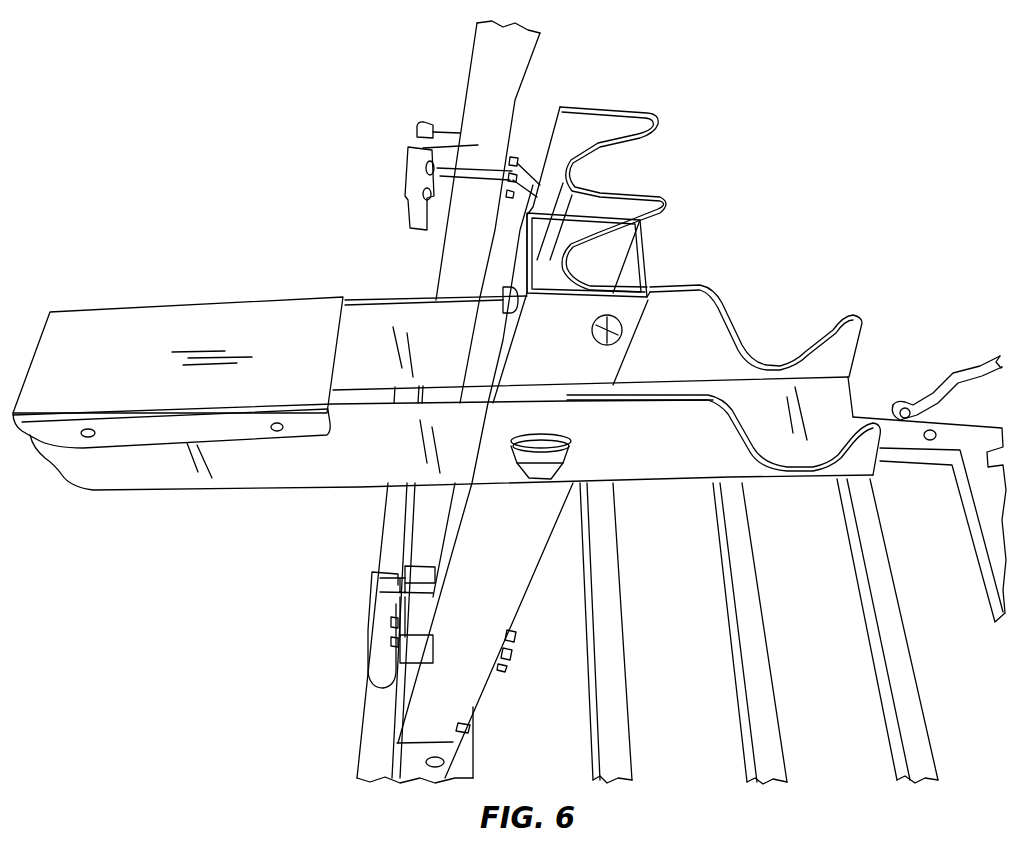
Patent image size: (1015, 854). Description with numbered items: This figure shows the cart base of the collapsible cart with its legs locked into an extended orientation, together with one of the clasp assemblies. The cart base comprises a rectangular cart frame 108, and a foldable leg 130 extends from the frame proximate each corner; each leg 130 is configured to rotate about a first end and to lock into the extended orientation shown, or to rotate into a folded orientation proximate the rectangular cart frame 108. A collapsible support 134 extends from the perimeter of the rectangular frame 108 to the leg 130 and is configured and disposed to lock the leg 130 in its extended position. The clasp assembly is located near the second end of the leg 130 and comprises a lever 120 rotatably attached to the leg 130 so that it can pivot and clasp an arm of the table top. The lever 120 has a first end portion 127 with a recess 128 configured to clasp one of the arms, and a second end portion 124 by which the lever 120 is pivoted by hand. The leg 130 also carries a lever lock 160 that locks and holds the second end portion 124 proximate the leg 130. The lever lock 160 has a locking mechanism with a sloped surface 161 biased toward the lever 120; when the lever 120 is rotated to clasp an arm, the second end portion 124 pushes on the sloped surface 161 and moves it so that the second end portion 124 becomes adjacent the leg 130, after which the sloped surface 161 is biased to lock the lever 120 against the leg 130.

The rectangular cart frame 108 is at (917, 457).
The lever 120 is at (330, 457).
The second end portion 124 is at (118, 398).
The first end portion 127 is at (758, 367).
The recess 128 is at (567, 260).
The foldable leg 130 is at (495, 72).
The collapsible support 134 is at (987, 367).
The lever lock 160 is at (418, 165).
The sloped surface 161 is at (425, 127).